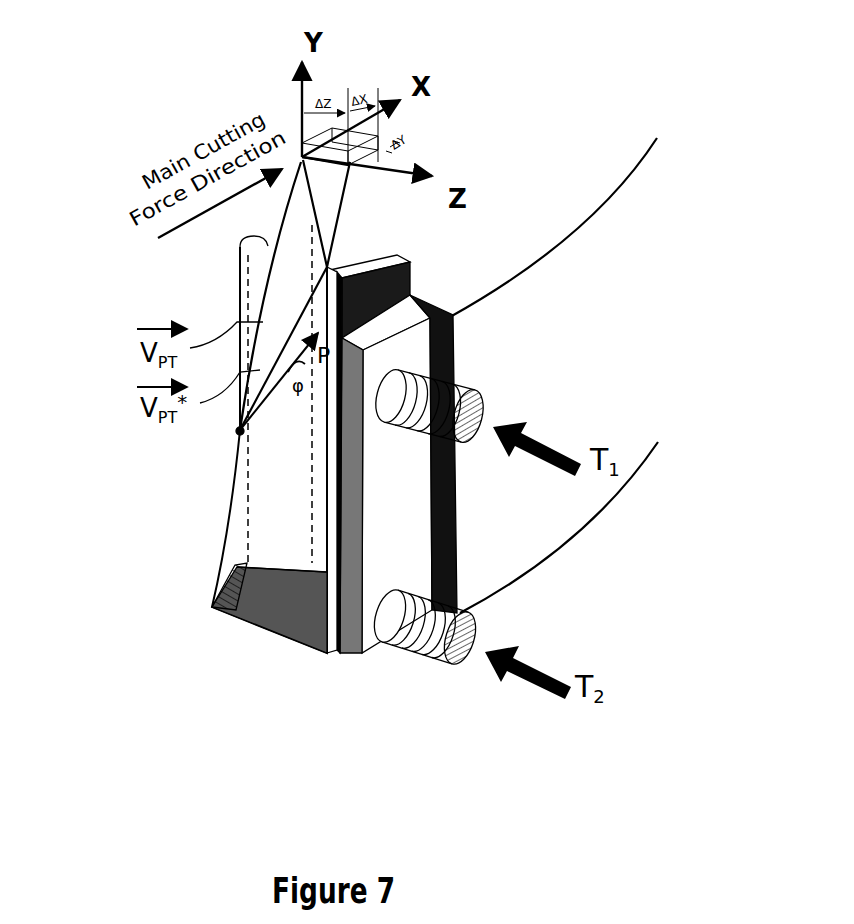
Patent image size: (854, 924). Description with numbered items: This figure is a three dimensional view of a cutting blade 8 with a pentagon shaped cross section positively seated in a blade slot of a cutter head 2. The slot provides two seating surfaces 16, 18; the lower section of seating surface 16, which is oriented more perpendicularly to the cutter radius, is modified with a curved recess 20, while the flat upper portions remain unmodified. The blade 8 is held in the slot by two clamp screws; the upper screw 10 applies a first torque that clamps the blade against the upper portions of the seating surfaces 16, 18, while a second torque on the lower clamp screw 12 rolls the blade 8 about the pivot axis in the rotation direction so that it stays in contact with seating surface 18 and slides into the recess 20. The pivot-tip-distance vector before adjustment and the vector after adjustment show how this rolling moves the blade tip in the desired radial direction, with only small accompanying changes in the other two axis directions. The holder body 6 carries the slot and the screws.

The cutter head 2 is at (567, 196).
The tool holder 6 is at (410, 511).
The cutting blade 8 is at (360, 243).
The first clamping screw 10 is at (458, 387).
The lower clamp screw 12 is at (410, 650).
The blade seating surface 16 is at (230, 261).
The blade seating surface 18 is at (257, 293).
The curved recess 20 is at (217, 590).